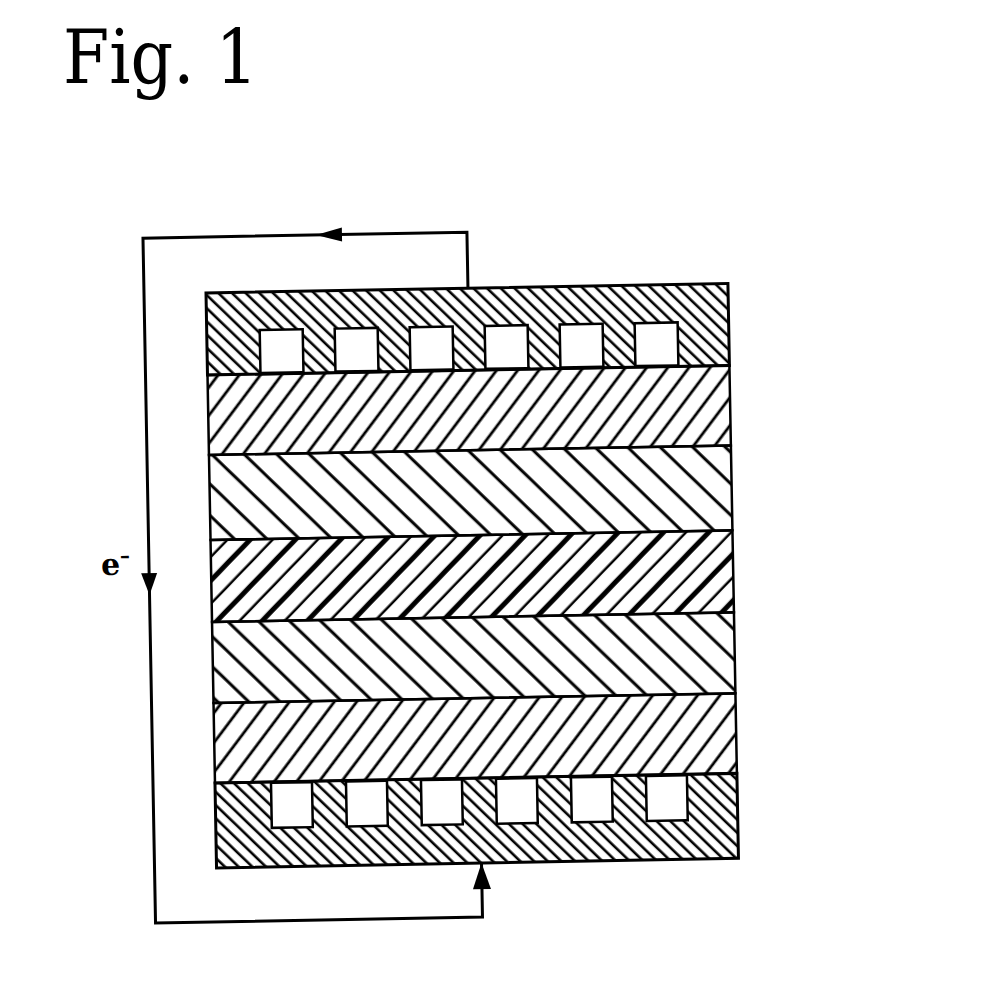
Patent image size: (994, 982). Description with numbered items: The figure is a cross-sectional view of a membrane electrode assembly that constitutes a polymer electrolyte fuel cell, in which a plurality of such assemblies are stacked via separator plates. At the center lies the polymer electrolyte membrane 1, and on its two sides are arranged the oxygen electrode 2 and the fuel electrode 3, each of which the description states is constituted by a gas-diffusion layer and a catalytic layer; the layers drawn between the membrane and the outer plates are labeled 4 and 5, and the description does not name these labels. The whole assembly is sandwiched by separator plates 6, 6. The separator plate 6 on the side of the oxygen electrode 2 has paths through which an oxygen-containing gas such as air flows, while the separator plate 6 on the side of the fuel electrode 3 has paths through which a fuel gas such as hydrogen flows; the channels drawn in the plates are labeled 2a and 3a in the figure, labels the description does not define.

The polymer electrolyte membrane 1 is at (715, 584).
The oxygen electrode 2 is at (746, 881).
The anode gas flow channel 2a is at (637, 808).
The fuel electrode 3 is at (742, 280).
The cathode gas flow channel 3a is at (653, 352).
The gas diffusion layer 4 is at (716, 417).
The catalyst layer 5 is at (714, 501).
The separator plate 6 is at (532, 569).